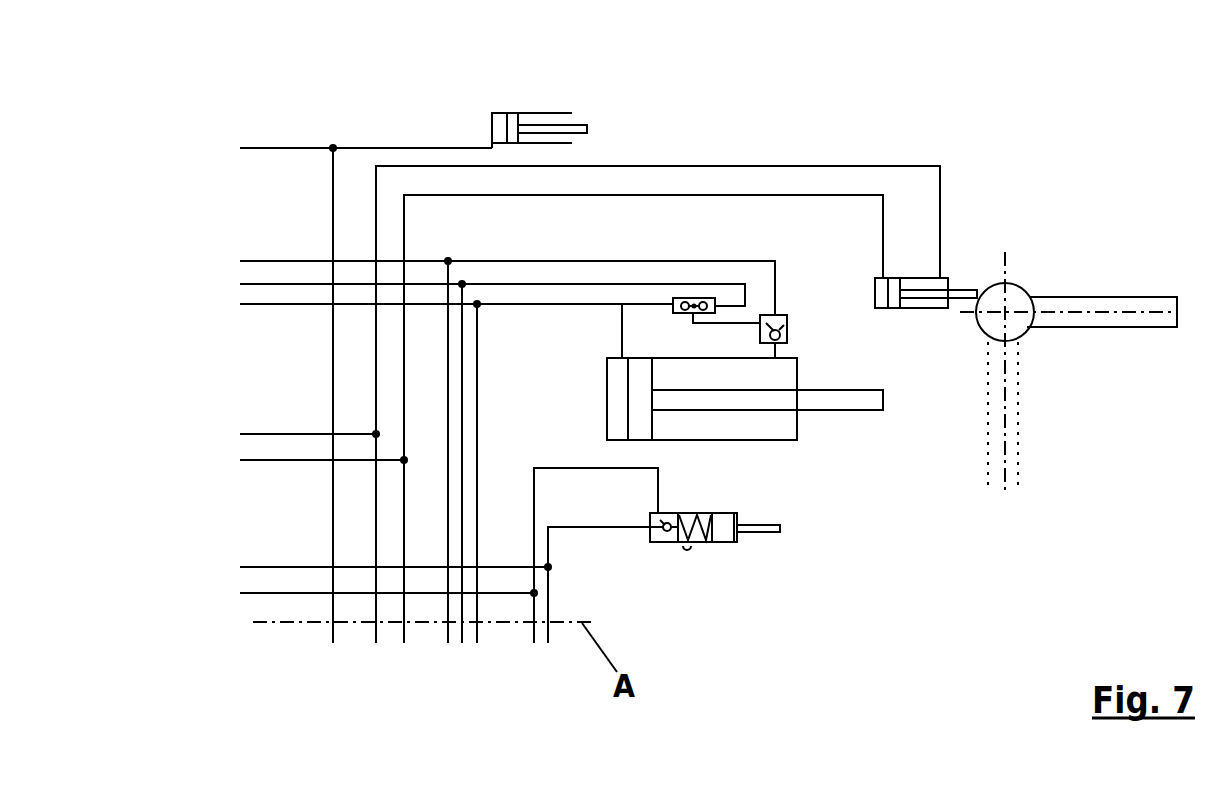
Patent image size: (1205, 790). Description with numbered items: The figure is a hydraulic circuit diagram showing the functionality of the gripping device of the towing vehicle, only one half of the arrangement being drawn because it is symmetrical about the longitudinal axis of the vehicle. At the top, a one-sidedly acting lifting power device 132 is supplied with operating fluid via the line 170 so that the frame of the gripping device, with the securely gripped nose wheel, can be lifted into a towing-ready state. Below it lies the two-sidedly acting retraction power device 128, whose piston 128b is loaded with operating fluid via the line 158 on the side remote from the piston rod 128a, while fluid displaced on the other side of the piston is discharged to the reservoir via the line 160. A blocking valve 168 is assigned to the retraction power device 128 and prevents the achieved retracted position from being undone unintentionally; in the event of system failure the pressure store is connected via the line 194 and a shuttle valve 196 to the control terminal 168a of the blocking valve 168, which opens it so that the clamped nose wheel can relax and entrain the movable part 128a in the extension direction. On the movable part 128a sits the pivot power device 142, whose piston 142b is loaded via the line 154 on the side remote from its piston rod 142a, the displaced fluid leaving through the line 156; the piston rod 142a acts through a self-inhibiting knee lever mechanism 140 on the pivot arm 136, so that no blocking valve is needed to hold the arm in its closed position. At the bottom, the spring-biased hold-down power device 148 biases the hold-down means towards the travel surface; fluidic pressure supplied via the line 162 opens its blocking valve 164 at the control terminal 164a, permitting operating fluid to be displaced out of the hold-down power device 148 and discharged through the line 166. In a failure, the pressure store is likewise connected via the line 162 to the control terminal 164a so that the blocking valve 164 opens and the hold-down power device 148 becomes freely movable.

The lifting power device 132 is at (500, 115).
The line 170 is at (336, 388).
The line 158 is at (477, 437).
The line 194 is at (462, 453).
The line 160 is at (426, 472).
The line 156 is at (279, 427).
The line 154 is at (293, 462).
The line 166 is at (415, 585).
The line 162 is at (419, 555).
The shuttle valve 196 is at (693, 302).
The blocking valve 168 is at (807, 318).
The control terminal 168a is at (772, 320).
The retraction power device 128 is at (723, 425).
The piston rod 128a is at (855, 400).
The piston 128b is at (640, 383).
The blocking valve 164 is at (670, 540).
The control terminal 164a is at (662, 522).
The hold-down power device 148 is at (703, 535).
The pivot power device 142 is at (945, 292).
The piston rod 142a is at (958, 292).
The piston 142b is at (885, 293).
The knee lever mechanism 140 is at (1017, 292).
The pivot arm 136 is at (1113, 305).